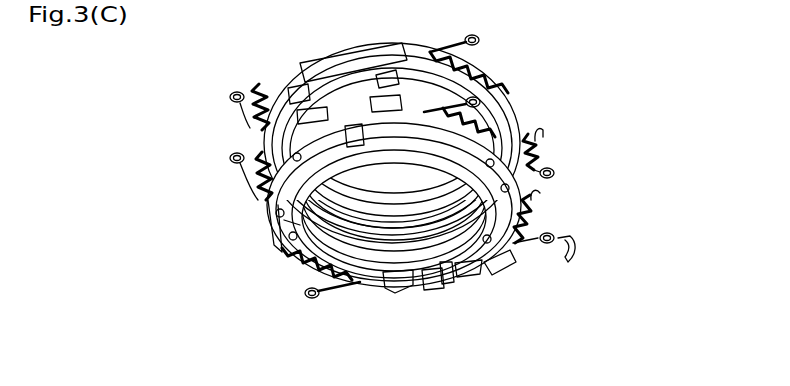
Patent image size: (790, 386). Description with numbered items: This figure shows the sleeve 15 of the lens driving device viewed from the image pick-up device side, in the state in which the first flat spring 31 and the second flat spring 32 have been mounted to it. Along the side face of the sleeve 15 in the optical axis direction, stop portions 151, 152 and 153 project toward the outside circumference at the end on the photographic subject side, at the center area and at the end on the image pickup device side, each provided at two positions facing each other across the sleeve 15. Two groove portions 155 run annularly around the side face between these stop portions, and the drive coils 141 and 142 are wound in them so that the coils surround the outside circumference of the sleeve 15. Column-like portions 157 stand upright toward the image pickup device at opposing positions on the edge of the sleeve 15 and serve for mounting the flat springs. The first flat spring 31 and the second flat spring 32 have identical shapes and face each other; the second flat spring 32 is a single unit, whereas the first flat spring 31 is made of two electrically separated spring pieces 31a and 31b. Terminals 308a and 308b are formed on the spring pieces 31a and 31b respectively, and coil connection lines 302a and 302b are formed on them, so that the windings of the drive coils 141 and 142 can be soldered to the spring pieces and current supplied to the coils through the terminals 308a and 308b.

The sleeve 15 is at (365, 270).
The first flat spring 31 is at (393, 283).
The spring piece 31a is at (487, 272).
The spring piece 31b is at (273, 210).
The second flat spring 32 is at (517, 93).
The drive coil 141 is at (246, 93).
The drive coil 142 is at (300, 97).
The stop portion 151 is at (330, 60).
The stop portion 152 is at (383, 75).
The stop portion 153 is at (390, 103).
The groove portion 155 is at (477, 46).
The column-like portion 157 is at (355, 148).
The coil connection line 302a is at (450, 273).
The coil connection line 302b is at (263, 142).
The terminal 308a is at (570, 246).
The terminal 308b is at (481, 102).